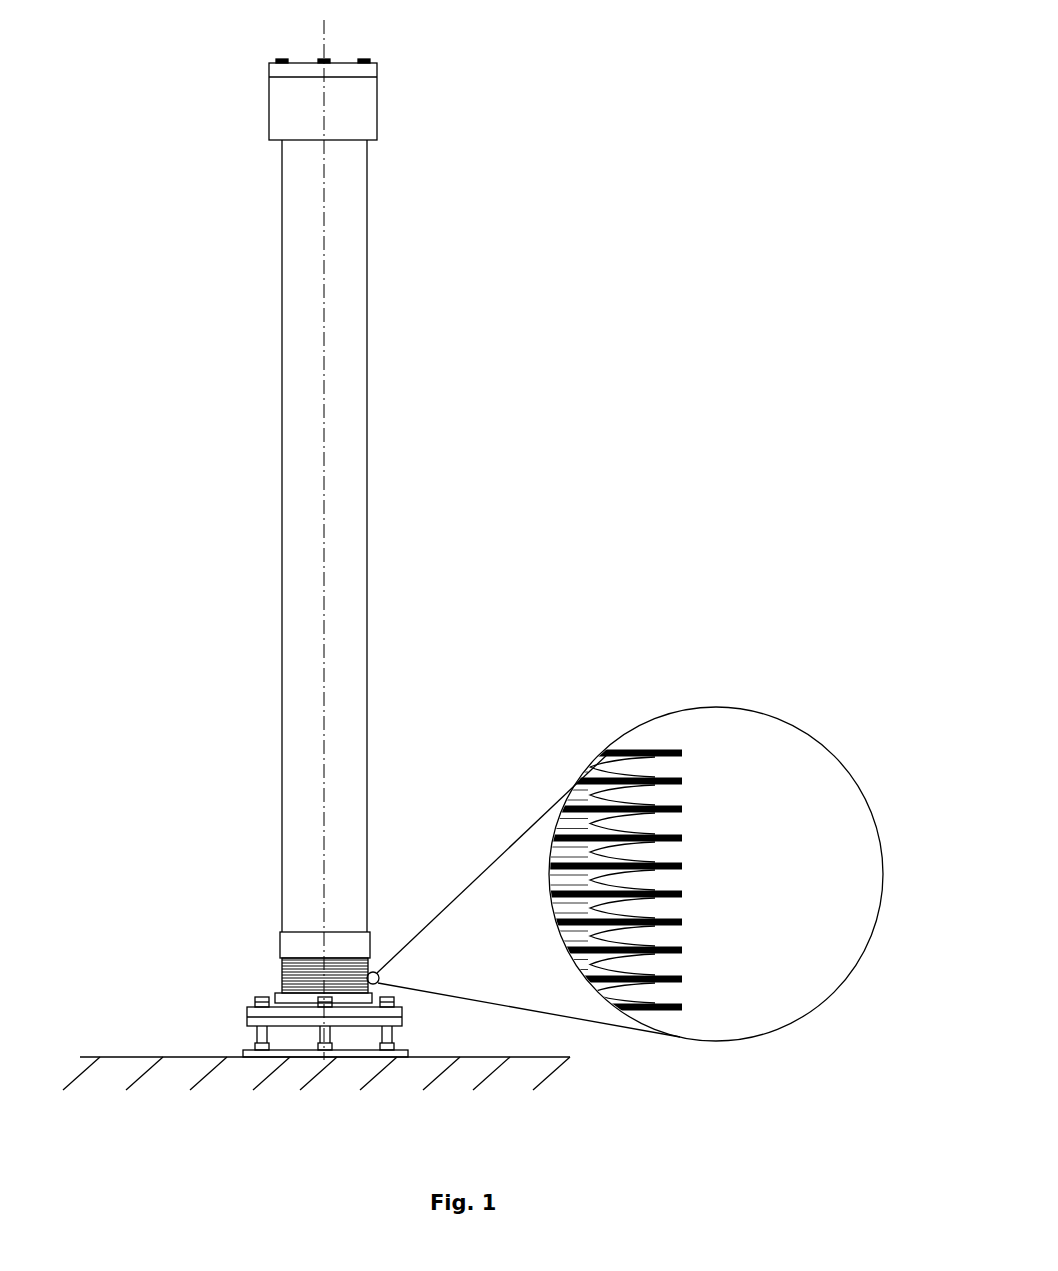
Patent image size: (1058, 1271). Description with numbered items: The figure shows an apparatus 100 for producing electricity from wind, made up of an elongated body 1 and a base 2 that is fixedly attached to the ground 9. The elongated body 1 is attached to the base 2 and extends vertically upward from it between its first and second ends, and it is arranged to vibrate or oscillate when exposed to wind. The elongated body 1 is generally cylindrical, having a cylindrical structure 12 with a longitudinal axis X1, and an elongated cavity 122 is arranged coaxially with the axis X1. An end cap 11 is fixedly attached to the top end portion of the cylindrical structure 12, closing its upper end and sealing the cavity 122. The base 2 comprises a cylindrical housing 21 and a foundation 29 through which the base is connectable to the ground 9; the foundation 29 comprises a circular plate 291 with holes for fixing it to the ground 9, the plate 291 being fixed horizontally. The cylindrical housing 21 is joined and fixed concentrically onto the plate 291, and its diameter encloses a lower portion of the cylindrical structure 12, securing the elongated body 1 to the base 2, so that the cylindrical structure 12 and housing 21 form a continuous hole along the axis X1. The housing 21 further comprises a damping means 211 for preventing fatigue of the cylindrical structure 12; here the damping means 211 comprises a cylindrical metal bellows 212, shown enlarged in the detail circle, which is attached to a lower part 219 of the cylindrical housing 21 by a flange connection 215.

The apparatus 100 is at (480, 214).
The elongated body 1 is at (203, 224).
The end cap 11 is at (315, 104).
The cylindrical structure 12 is at (307, 362).
The elongated cavity 122 is at (307, 518).
The longitudinal axis X1 is at (323, 412).
The base 2 is at (208, 905).
The cylindrical housing 21 is at (308, 948).
The damping means 211 is at (280, 973).
The cylindrical metal bellows 212 is at (690, 850).
The flange connection 215 is at (237, 1010).
The lower part of the cylindrical housing 219 is at (290, 1038).
The foundation 29 is at (240, 1065).
The circular plate 291 is at (277, 1060).
The ground 9 is at (401, 1109).